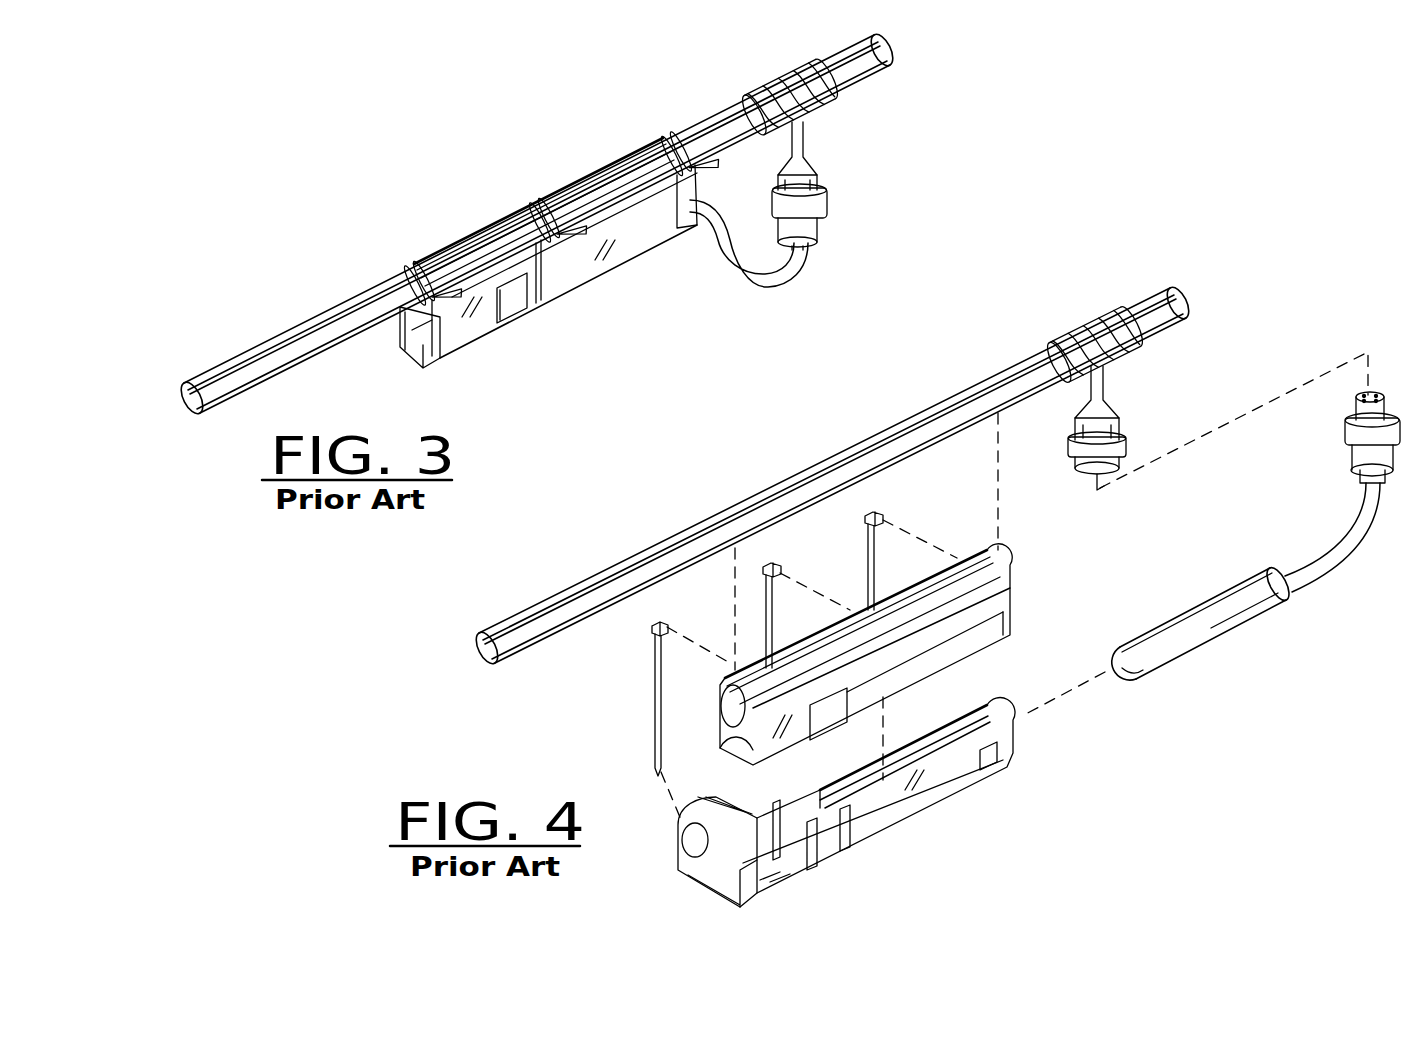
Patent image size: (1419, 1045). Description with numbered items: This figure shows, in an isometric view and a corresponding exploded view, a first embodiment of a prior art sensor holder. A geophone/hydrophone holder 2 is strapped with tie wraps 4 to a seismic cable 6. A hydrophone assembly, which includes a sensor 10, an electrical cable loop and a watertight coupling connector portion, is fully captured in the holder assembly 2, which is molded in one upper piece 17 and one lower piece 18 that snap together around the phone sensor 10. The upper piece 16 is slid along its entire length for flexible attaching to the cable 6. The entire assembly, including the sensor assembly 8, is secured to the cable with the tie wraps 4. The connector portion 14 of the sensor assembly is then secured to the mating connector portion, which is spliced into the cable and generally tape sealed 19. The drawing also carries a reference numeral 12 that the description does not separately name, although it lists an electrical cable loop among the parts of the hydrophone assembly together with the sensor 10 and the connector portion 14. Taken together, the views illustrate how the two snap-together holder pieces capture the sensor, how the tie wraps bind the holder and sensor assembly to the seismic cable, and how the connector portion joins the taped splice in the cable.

In FIG. 3, the geophone/hydrophone holder 2 is at (560, 326).
In FIG. 3, the tie wraps 4 is at (402, 268).
In FIG. 4, the tie wraps 4 is at (650, 653).
In FIG. 3, the seismic cable 6 is at (273, 333).
In FIG. 4, the seismic cable 6 is at (622, 555).
In FIG. 4, the sensor assembly 8 is at (1232, 655).
In FIG. 4, the sensor 10 is at (1160, 620).
In FIG. 4, the cable 12 is at (1328, 567).
In FIG. 4, the connector portion 14 is at (1350, 450).
In FIG. 4, the upper piece 16 is at (1112, 412).
In FIG. 4, the upper piece 17 is at (1015, 556).
In FIG. 4, the lower piece 18 is at (918, 813).
In FIG. 3, the tape seal 19 is at (790, 97).
In FIG. 4, the tape seal 19 is at (1068, 333).